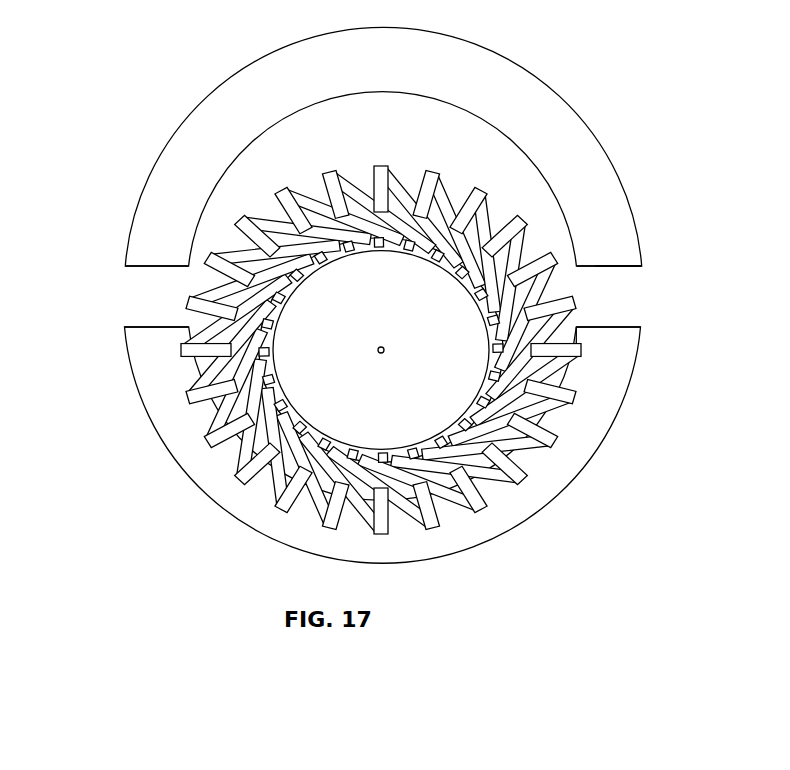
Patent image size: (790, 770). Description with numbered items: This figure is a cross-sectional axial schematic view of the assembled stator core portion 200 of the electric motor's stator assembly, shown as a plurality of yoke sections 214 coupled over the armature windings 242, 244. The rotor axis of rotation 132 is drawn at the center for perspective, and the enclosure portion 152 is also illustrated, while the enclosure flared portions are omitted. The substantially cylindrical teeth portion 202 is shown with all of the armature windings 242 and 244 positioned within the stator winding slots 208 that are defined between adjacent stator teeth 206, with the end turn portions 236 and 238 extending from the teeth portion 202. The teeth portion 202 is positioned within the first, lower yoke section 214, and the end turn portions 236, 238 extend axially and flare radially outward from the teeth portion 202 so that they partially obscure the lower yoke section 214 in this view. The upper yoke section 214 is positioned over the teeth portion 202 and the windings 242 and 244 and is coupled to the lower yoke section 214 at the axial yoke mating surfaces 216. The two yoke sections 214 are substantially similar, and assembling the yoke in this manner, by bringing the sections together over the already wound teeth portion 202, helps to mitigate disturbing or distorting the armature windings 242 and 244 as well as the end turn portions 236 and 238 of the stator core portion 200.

The stator core portion 200 is at (150, 50).
The yoke section 214 is at (617, 203).
The axial yoke mating surface 216 is at (152, 270).
The armature winding 242 is at (580, 268).
The armature winding 244 is at (628, 378).
The end turn portion 236 is at (381, 362).
The end turn portion 238 is at (381, 350).
The stator winding slot 208 is at (381, 350).
The stator tooth 206 is at (381, 350).
The teeth portion 202 is at (381, 350).
The enclosure portion 152 is at (381, 350).
The axis of rotation 132 is at (383, 354).